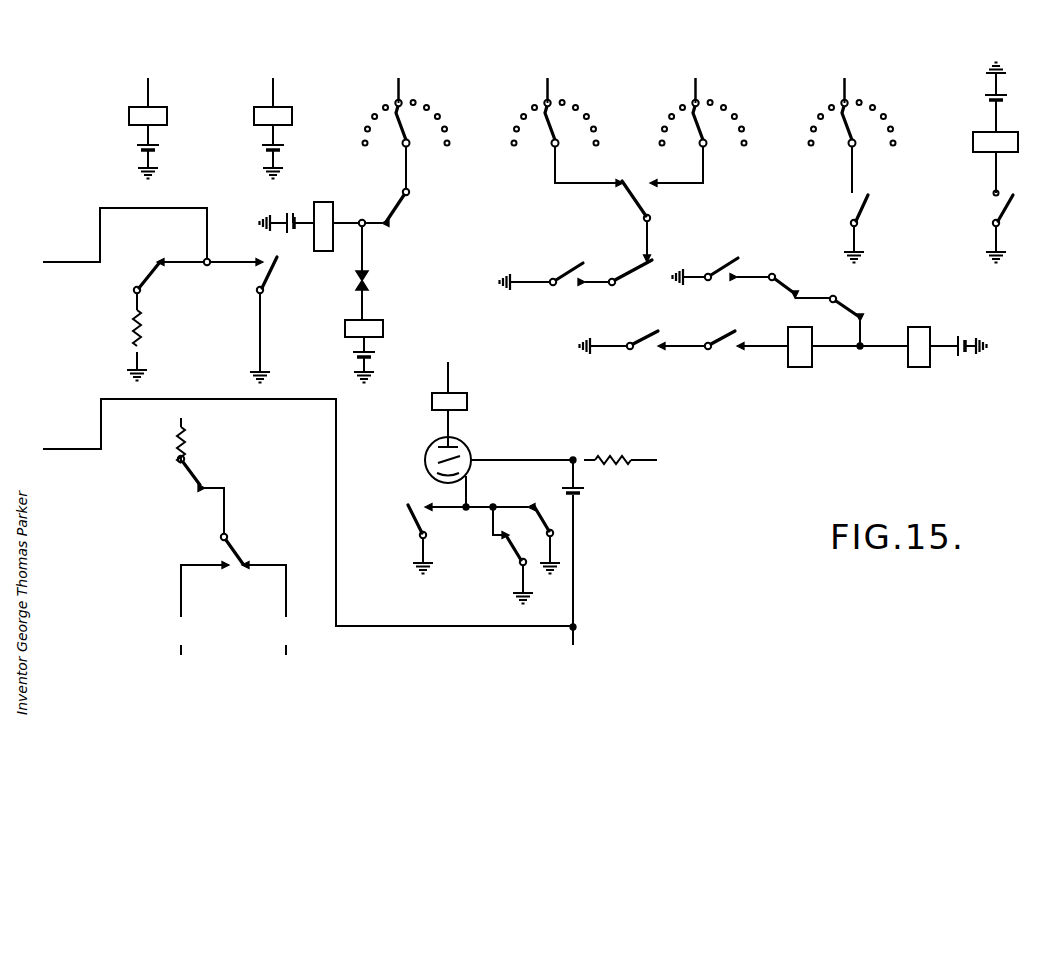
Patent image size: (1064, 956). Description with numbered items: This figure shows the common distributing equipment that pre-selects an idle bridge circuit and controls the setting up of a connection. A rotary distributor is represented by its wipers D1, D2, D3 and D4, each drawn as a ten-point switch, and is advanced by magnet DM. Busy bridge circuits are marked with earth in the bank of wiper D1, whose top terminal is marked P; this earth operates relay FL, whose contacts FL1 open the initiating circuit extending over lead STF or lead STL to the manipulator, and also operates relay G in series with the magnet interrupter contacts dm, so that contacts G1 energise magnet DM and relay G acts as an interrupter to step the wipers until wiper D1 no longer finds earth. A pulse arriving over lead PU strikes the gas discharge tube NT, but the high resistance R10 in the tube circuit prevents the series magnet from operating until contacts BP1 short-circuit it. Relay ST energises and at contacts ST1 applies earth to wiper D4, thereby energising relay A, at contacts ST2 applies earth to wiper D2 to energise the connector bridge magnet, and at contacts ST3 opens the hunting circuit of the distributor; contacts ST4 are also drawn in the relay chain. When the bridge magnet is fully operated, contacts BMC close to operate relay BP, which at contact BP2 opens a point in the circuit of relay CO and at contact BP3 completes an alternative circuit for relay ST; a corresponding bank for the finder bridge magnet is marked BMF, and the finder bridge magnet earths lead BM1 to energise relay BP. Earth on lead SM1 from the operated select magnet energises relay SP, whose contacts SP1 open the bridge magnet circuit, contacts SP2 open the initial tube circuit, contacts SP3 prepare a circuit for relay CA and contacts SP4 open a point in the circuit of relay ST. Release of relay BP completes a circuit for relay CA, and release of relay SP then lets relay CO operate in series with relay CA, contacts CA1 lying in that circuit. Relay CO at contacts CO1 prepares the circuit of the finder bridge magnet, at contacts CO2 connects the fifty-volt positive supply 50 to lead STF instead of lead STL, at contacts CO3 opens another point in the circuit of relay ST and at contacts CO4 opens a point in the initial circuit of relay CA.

The lead SM1 is at (163, 126).
The relay SP is at (192, 140).
The bridge magnet lead BM1 is at (289, 126).
The relay BP is at (316, 140).
The P dial terminal P is at (410, 88).
The wiper D1 is at (406, 123).
The contacts ST3 is at (401, 190).
The relay FL is at (324, 322).
The magnet interrupter contacts dm is at (380, 273).
The relay G is at (407, 347).
The contacts SP2 is at (126, 250).
The high resistance R10 is at (159, 337).
The contacts BP1 is at (261, 320).
The lead PU is at (81, 447).
The fifty-volt positive supply 50 is at (193, 433).
The contacts FL1 is at (184, 495).
The contacts CO2 is at (254, 550).
The lead STF is at (194, 610).
The lead STL is at (272, 610).
The relay ST is at (497, 413).
The gas discharge tube NT is at (478, 472).
The contact BP3 is at (447, 539).
The contacts CO3 is at (503, 557).
The contacts SP4 is at (537, 527).
The contacts BMC is at (578, 88).
The wiper D2 is at (568, 132).
The BMF dial terminal BMF is at (725, 88).
The dial switch D3 is at (698, 132).
The contacts CO1 is at (660, 221).
The contacts ST2 is at (543, 273).
The contacts SP1 is at (616, 282).
The contacts SP3 is at (721, 262).
The contacts CO4 is at (799, 280).
The contact BP2 is at (861, 316).
The ST relay contact 4 ST4 is at (643, 332).
The CA relay contact 1 CA1 is at (741, 330).
The relay CO is at (811, 393).
The relay CA is at (928, 393).
The relay A is at (857, 88).
The wiper D4 is at (852, 135).
The contacts ST1 is at (875, 229).
The magnet DM is at (1014, 129).
The contacts G1 is at (982, 229).